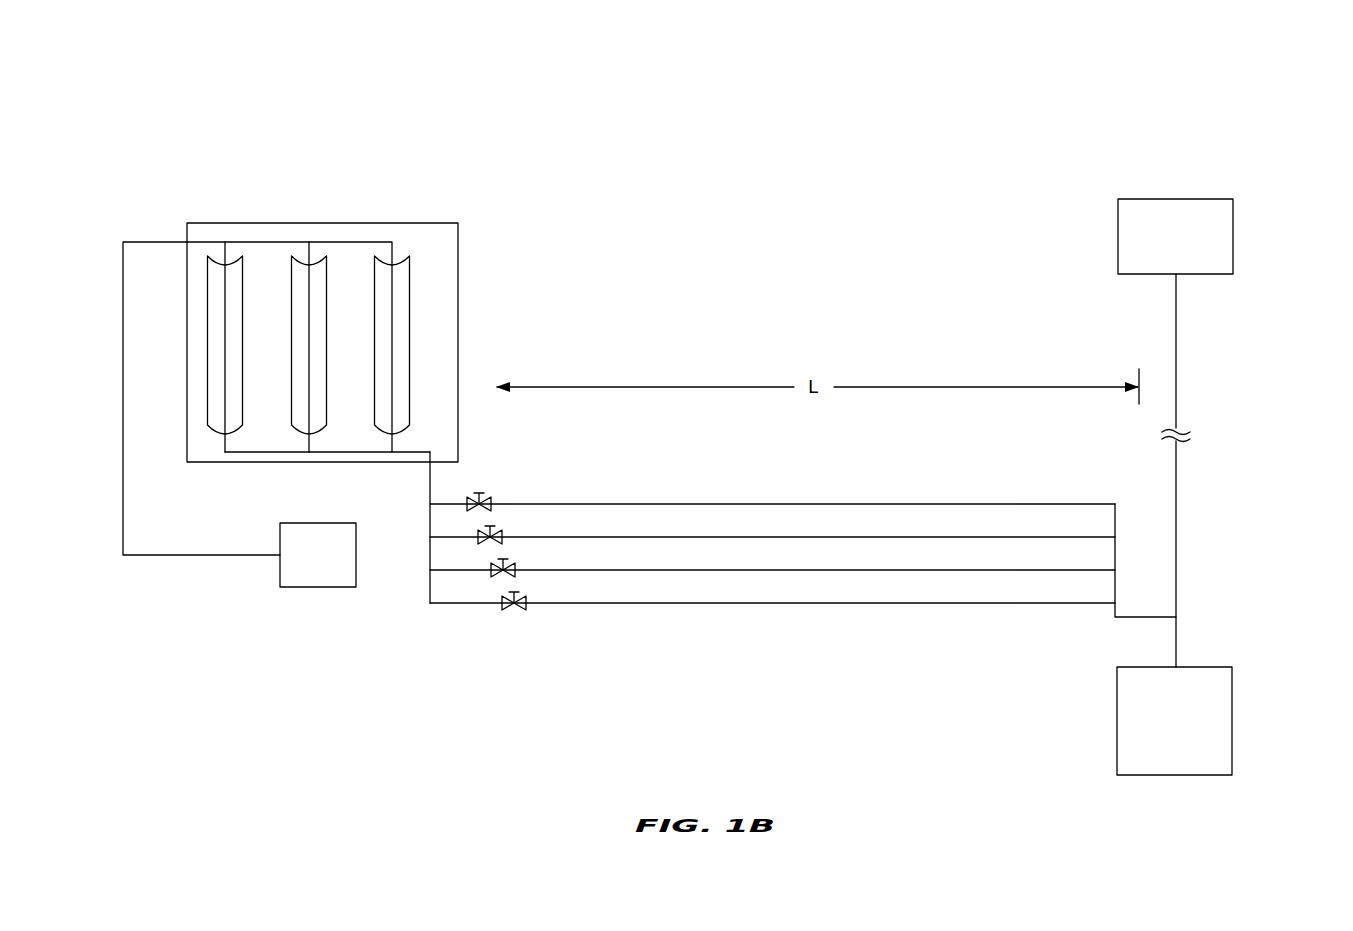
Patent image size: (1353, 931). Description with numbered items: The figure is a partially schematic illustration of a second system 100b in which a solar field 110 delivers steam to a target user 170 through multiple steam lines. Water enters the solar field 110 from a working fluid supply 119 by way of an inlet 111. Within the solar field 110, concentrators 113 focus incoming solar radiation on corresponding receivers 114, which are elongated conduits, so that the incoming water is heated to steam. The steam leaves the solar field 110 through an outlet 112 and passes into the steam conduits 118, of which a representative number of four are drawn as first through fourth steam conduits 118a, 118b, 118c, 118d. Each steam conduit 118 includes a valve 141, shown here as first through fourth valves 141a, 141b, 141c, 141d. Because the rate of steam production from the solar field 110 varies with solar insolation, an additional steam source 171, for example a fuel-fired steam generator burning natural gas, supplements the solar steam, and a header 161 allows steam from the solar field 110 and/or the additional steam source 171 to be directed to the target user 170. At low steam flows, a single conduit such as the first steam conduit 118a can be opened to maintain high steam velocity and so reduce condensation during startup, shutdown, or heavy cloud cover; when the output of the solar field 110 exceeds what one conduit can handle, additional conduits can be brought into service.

The second system 100b is at (1001, 124).
The solar field 110 is at (420, 223).
The inlet 111 is at (181, 231).
The outlet 112 is at (425, 468).
The concentrators 113 is at (290, 275).
The receivers 114 is at (226, 266).
The steam conduits 118 is at (803, 521).
The first steam conduit 118a is at (716, 504).
The second steam conduit 118b is at (773, 537).
The third steam conduit 118c is at (832, 570).
The fourth steam conduit 118d is at (892, 603).
The working fluid supply 119 is at (318, 587).
The valve 141 is at (579, 568).
The first valve 141a is at (485, 497).
The second valve 141b is at (497, 530).
The third valve 141c is at (509, 562).
The fourth valve 141d is at (520, 595).
The header 161 is at (1176, 555).
The target user 170 is at (1232, 722).
The additional steam source 171 is at (1233, 237).